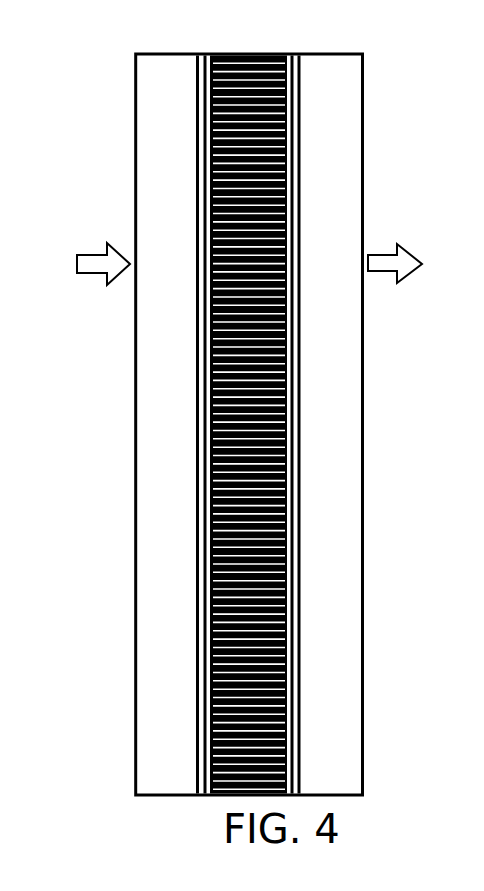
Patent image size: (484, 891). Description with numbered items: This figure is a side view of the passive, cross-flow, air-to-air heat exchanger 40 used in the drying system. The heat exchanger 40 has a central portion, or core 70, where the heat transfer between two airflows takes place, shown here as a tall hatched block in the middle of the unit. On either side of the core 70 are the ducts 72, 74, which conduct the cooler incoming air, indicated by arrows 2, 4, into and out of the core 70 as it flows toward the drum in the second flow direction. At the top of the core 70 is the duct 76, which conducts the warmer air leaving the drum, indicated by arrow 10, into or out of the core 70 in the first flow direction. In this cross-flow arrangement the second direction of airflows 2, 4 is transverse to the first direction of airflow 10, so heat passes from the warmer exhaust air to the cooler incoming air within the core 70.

The arrow 10 is at (262, 1).
The heat exchanger 40 is at (116, 84).
The duct 72 is at (179, 151).
The duct 74 is at (342, 151).
The core 70 is at (213, 382).
The duct 76 is at (238, 53).
The arrow 2 is at (93, 255).
The arrow 4 is at (383, 254).